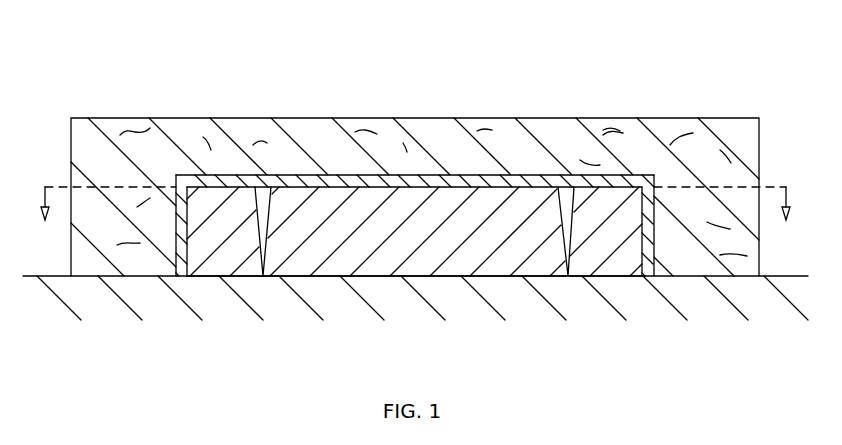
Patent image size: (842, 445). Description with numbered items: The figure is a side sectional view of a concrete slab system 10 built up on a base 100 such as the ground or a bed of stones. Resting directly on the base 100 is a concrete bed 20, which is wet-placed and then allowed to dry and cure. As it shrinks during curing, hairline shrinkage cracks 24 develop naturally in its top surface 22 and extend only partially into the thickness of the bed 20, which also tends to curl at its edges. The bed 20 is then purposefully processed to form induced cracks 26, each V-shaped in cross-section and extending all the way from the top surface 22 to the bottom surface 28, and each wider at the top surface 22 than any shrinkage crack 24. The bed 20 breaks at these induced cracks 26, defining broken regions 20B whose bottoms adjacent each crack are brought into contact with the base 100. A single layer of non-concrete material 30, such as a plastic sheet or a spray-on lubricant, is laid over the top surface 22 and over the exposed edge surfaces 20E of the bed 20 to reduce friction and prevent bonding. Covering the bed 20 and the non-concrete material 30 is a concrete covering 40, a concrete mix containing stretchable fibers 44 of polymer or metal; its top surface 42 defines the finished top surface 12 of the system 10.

The concrete slab system 10 is at (88, 82).
The top/finished surface 12 is at (374, 118).
The concrete bed 20 is at (510, 263).
The broken regions 20B is at (235, 258).
The exposed edge surfaces 20E is at (188, 247).
The top surface 22 is at (303, 187).
The shrinkage cracks 24 is at (420, 190).
The induced cracks 26 is at (271, 187).
The bottom surface 28 is at (377, 278).
The non-concrete material 30 is at (560, 187).
The concrete covering 40 is at (182, 128).
The top surface 42 is at (433, 118).
The stretchable fibers 44 is at (256, 153).
The base 100 is at (43, 276).